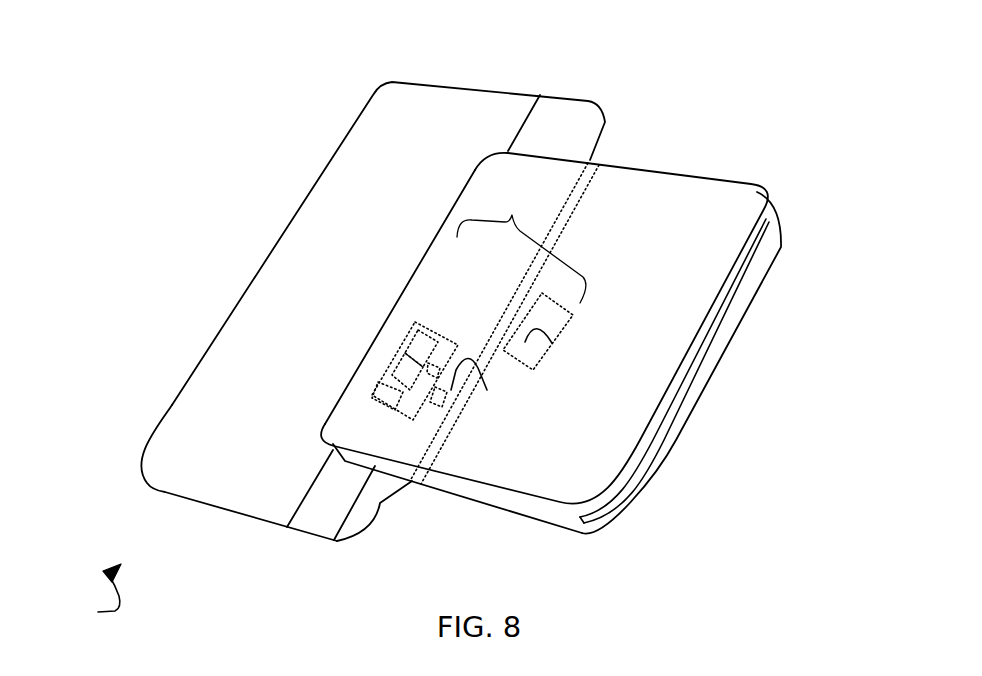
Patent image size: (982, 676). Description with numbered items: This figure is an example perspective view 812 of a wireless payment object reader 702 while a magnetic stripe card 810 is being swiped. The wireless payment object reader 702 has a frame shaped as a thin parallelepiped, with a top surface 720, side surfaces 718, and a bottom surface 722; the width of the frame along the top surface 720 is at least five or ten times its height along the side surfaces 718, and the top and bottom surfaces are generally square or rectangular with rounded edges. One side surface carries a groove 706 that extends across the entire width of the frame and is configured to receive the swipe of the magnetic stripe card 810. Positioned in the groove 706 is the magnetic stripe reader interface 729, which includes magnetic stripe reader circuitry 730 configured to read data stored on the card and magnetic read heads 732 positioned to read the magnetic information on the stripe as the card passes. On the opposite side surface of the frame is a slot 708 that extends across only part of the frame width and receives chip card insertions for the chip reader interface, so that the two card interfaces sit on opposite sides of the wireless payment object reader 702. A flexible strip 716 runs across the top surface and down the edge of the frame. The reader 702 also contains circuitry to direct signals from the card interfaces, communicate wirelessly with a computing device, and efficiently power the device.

The wireless payment object reader 702 is at (599, 342).
The groove 706 is at (383, 318).
The slot 708 is at (683, 407).
The flexible circuit strip 716 is at (372, 455).
The side surfaces 718 is at (763, 268).
The top surface 720 is at (620, 277).
The bottom surface 722 is at (548, 513).
The magnetic stripe reader interface 729 is at (521, 246).
The magnetic stripe reader circuitry 730 is at (552, 343).
The magnetic read heads 732 is at (437, 393).
The magnetic stripe card 810 is at (387, 82).
The perspective view 812 is at (53, 633).